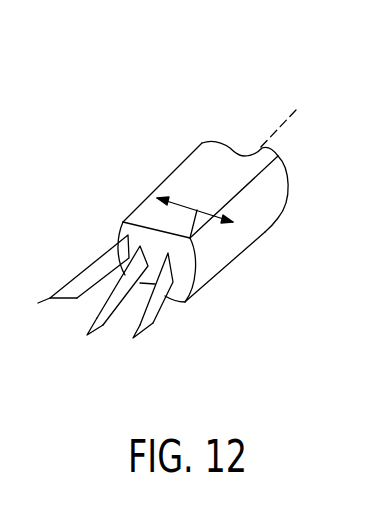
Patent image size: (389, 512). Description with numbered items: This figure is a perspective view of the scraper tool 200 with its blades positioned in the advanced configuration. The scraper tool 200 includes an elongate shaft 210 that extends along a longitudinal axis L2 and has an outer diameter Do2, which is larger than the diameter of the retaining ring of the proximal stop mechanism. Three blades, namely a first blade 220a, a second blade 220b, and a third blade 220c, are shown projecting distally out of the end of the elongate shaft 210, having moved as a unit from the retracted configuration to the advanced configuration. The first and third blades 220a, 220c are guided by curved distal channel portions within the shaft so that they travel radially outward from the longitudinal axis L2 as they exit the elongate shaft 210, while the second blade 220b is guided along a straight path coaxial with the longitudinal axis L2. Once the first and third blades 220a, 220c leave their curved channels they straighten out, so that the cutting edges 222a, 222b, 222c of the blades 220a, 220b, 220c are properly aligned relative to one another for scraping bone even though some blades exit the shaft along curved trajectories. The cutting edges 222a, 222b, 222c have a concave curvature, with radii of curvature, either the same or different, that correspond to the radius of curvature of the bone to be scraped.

The scraper tool 200 is at (148, 154).
The elongate shaft 210 is at (260, 225).
The first blade 220a is at (70, 286).
The second blade 220b is at (122, 275).
The third blade 220c is at (158, 313).
The cutting edge 222a is at (50, 304).
The cutting edge 222b is at (102, 326).
The cutting edge 222c is at (152, 324).
The longitudinal axis L2 is at (287, 119).
The outer diameter Do2 is at (197, 210).